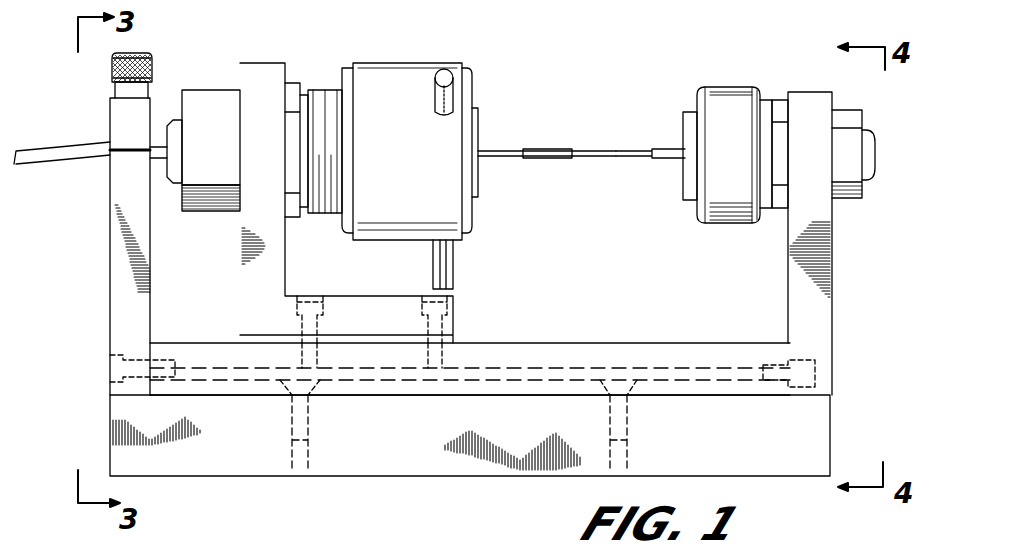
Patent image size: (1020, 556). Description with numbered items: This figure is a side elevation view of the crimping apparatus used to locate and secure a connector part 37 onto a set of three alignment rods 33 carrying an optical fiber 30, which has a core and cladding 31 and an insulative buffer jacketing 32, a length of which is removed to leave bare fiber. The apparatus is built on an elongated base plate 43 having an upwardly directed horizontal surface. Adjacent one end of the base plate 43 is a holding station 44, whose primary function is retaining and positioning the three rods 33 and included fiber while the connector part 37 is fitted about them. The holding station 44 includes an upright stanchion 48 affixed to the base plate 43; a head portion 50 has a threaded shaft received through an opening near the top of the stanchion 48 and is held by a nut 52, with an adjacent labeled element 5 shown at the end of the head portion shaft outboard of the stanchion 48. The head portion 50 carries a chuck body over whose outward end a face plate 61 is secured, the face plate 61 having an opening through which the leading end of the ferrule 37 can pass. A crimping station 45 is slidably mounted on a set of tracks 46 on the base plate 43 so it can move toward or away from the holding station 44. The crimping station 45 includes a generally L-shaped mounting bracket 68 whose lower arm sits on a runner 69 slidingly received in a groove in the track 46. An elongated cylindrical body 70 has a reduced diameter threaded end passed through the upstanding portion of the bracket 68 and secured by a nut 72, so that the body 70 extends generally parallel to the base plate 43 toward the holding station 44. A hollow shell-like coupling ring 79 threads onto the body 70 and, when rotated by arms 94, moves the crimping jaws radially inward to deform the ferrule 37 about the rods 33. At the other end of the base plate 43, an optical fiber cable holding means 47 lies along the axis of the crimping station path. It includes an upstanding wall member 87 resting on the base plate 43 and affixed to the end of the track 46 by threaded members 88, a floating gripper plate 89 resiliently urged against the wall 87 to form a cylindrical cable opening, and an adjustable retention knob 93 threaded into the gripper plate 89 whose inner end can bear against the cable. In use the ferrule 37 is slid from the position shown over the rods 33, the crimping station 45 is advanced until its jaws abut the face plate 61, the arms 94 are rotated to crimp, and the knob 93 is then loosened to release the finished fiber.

The nut 5 is at (891, 196).
The buffer-jacketed optical fiber 30 is at (57, 164).
The core and cladding 31 is at (594, 150).
The buffer jacketing 32 is at (78, 143).
The alignment rods 33 is at (672, 162).
The connector part 37 is at (559, 160).
The base plate 43 is at (812, 419).
The holding station 44 is at (729, 228).
The crimping station 45 is at (410, 61).
The tracks 46 is at (596, 345).
The optical fiber cable holding means 47 is at (94, 302).
The upright stanchion 48 is at (833, 260).
The head portion 50 is at (781, 100).
The nut 52 is at (845, 200).
The face plate 61 is at (683, 125).
The L-shaped mounting bracket 68 is at (240, 292).
The runner 69 is at (455, 340).
The cylindrical body 70 is at (318, 88).
The nut 72 is at (210, 212).
The coupling ring 79 is at (405, 175).
The upstanding wall member 87 is at (110, 339).
The threaded members 88 is at (108, 388).
The floating gripper plate 89 is at (114, 111).
The adjustable retention knob 93 is at (155, 66).
The arms 94 is at (455, 78).